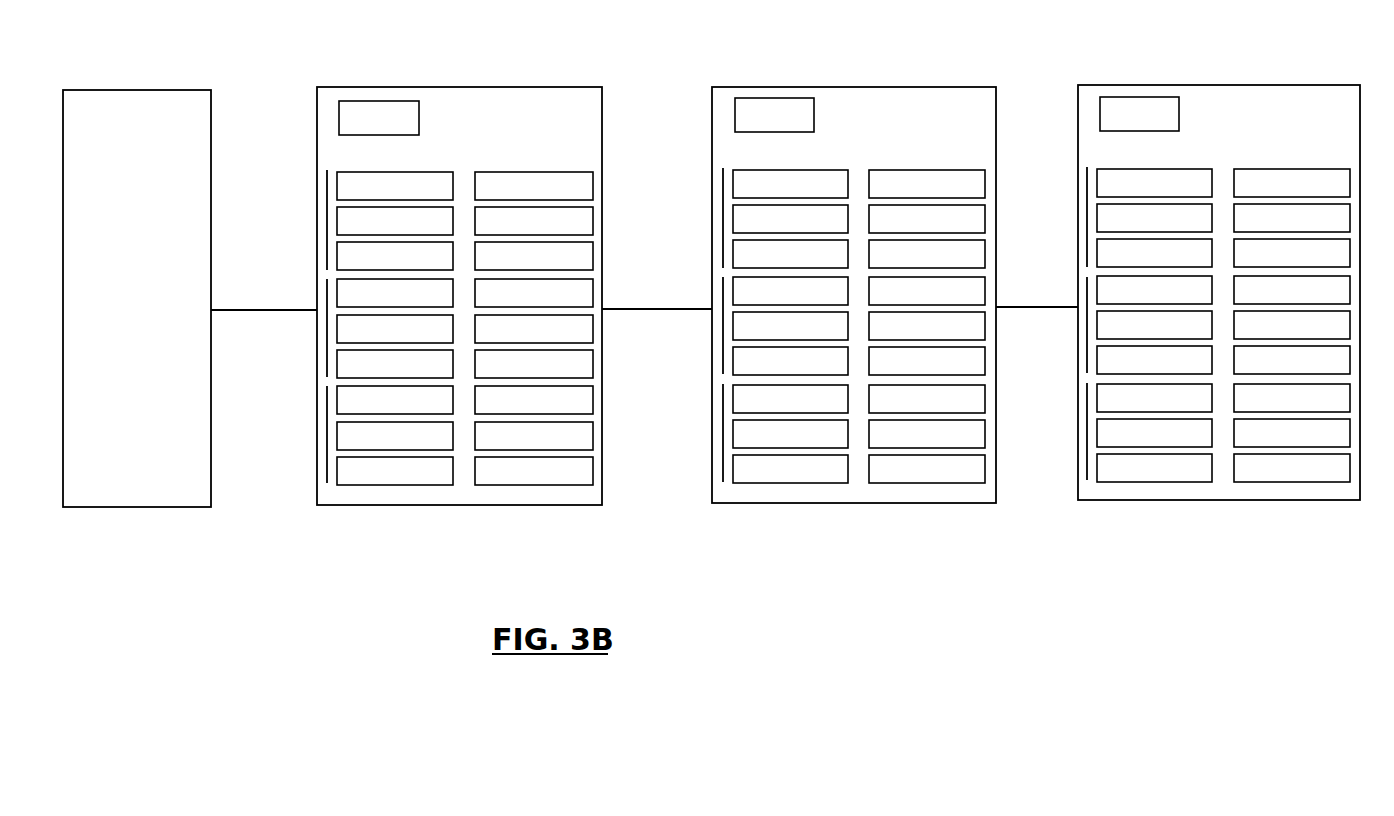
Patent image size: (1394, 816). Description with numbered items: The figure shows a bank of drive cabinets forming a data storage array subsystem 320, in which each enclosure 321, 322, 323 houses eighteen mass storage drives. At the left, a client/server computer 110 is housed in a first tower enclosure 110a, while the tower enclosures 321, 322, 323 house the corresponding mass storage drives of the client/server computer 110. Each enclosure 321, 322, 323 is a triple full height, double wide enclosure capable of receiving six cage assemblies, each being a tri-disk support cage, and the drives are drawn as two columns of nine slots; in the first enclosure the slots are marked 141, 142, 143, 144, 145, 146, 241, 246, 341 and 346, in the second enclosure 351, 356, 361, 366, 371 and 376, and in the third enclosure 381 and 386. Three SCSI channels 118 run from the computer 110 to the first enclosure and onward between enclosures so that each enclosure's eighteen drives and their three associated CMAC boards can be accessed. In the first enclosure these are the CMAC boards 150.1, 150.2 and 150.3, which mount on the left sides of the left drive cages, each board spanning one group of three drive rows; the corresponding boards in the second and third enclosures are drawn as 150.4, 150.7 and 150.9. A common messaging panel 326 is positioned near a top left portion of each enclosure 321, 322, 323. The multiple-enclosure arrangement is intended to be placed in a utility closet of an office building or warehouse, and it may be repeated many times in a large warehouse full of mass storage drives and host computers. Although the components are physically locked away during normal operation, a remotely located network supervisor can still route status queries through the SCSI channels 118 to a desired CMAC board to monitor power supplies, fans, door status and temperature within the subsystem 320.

The client/server computer 110 is at (137, 298).
The first tower enclosure 110a is at (198, 84).
The SCSI channels 118 is at (291, 303).
The data storage array subsystem 320 is at (296, 57).
The enclosure 321 is at (460, 87).
The enclosure 322 is at (872, 86).
The enclosure 323 is at (1235, 85).
The common messaging panel 326 is at (379, 118).
The data block 141 is at (395, 186).
The data block 142 is at (395, 221).
The data block 143 is at (395, 256).
The data block 144 is at (534, 186).
The data block 145 is at (534, 221).
The data block 146 is at (534, 256).
The data block 241 is at (395, 293).
The data block 246 is at (534, 364).
The data block 341 is at (395, 400).
The data block 346 is at (534, 471).
The data block 351 is at (790, 184).
The data block 356 is at (927, 254).
The data block 361 is at (790, 291).
The data block 366 is at (927, 361).
The data block 371 is at (790, 399).
The data block 376 is at (927, 469).
The data block 381 is at (1154, 183).
The data block 386 is at (1292, 253).
The CMAC board 150.1 is at (325, 212).
The CMAC board 150.2 is at (327, 346).
The CMAC board 150.3 is at (327, 436).
The storage device 150.4 is at (721, 208).
The storage device 150.7 is at (1086, 204).
The storage device 150.9 is at (1087, 462).